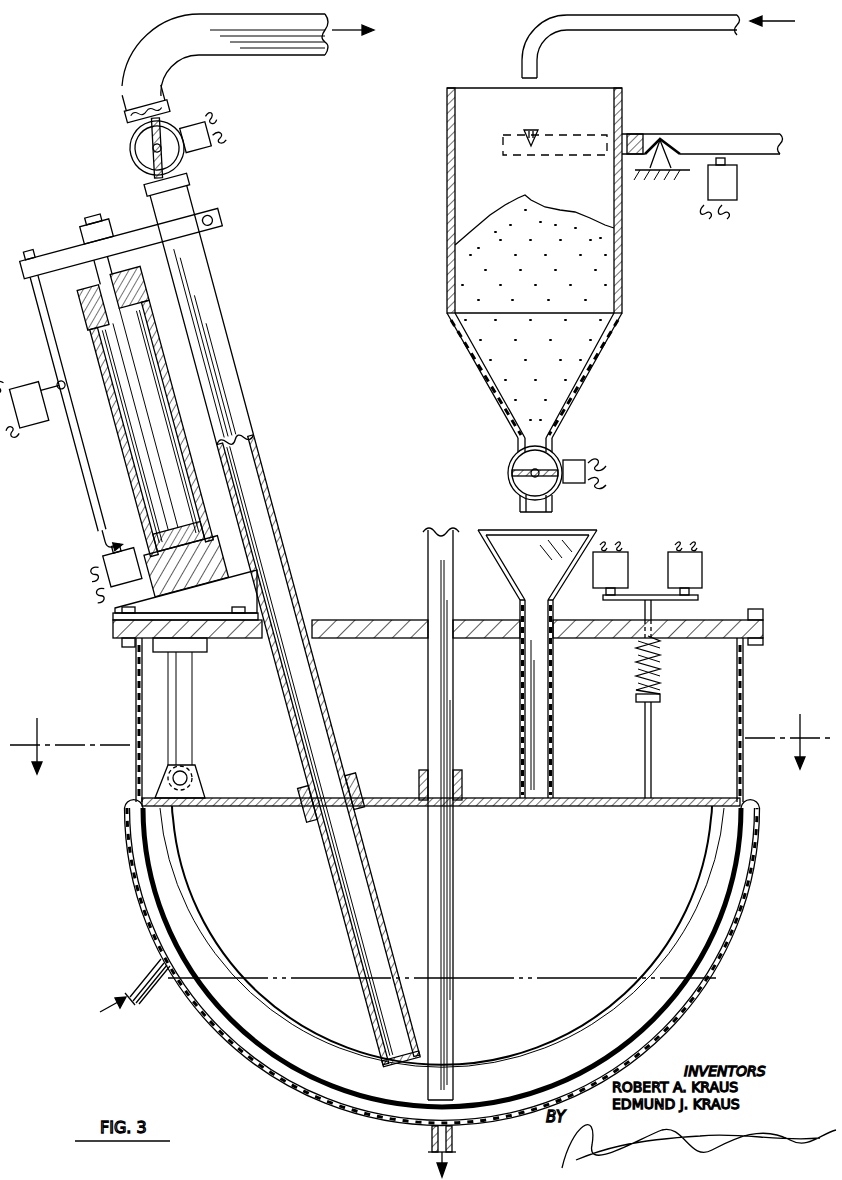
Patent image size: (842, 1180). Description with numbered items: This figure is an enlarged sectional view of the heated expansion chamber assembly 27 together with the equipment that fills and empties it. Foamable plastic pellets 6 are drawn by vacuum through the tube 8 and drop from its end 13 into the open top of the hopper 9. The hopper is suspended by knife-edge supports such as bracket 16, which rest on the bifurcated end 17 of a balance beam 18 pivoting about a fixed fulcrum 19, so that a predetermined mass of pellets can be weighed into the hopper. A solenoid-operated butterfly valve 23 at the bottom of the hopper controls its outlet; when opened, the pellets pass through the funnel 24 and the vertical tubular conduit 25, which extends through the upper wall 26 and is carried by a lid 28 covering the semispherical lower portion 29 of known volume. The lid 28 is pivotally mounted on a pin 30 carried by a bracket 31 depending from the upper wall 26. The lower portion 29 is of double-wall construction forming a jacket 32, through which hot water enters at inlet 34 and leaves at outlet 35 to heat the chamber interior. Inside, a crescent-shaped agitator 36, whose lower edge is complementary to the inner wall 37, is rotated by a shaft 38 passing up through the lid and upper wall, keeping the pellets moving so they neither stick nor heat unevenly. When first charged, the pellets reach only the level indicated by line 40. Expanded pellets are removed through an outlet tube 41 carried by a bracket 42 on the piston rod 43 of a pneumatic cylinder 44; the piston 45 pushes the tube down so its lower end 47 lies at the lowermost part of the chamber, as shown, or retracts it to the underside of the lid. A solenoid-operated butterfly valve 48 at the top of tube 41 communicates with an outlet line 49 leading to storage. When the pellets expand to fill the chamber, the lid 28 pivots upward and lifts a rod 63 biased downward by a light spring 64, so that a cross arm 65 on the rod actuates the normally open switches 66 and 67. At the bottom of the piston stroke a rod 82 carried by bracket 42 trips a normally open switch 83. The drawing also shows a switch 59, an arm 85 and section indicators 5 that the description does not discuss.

The section line 5- 5 is at (45, 804).
The foamable plastic pellets 6 is at (612, 298).
The tube 8 is at (665, 28).
The hopper 9 is at (446, 162).
The end of line 13 is at (524, 62).
The knife-edge support bracket 16 is at (522, 130).
The bifurcated end 17 is at (733, 142).
The balance beam 18 is at (690, 115).
The fulcrum 19 is at (660, 138).
The butterfly valve 23 is at (558, 458).
The funnel 24 is at (498, 553).
The tubular conduit 25 is at (556, 692).
The upper wall 26 is at (396, 618).
The heated expansion chamber assembly 27 is at (112, 683).
The lid 28 is at (612, 796).
The lower portion of chamber 29 is at (530, 893).
The pin 30 is at (196, 773).
The bracket 31 is at (186, 715).
The jacket 32 is at (726, 922).
The inlet 34 is at (152, 975).
The outlet 35 is at (453, 1132).
The crescent-shaped agitator 36 is at (178, 900).
The inner wall 37 is at (718, 898).
The shaft 38 is at (436, 526).
The liquid level 40 is at (530, 975).
The outlet tube 41 is at (262, 482).
The bracket 42 is at (222, 218).
The piston rod 43 is at (110, 283).
The pneumatic cylinder 44 is at (126, 420).
The piston 45 is at (152, 540).
The lower end of tube 47 is at (334, 1080).
The butterfly valve 48 is at (130, 150).
The outlet line 49 is at (272, 56).
The switch 59 is at (740, 183).
The rod 63 is at (654, 740).
The spring 64 is at (659, 673).
The cross arm 65 is at (700, 596).
The switch 66 is at (623, 550).
The switch 67 is at (700, 550).
The rod 82 is at (80, 440).
The switch 83 is at (100, 568).
The actuating arm 85 is at (97, 533).